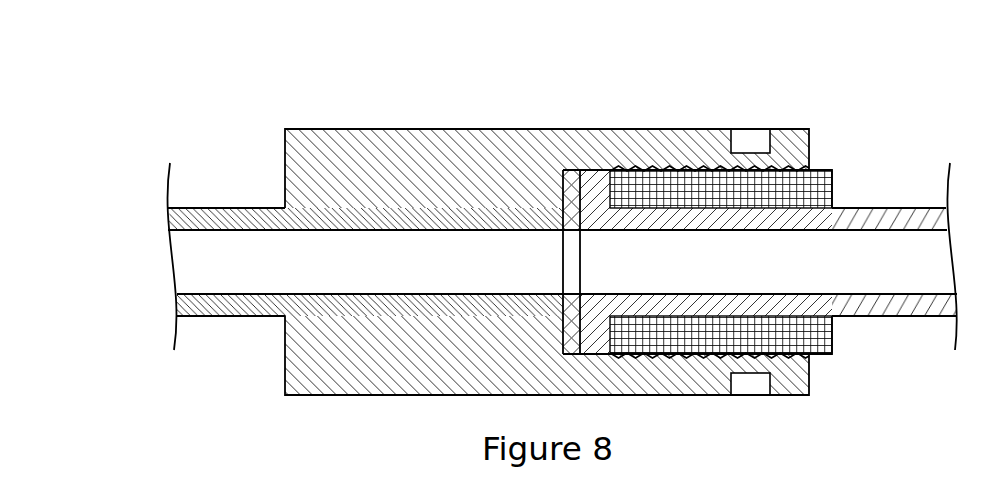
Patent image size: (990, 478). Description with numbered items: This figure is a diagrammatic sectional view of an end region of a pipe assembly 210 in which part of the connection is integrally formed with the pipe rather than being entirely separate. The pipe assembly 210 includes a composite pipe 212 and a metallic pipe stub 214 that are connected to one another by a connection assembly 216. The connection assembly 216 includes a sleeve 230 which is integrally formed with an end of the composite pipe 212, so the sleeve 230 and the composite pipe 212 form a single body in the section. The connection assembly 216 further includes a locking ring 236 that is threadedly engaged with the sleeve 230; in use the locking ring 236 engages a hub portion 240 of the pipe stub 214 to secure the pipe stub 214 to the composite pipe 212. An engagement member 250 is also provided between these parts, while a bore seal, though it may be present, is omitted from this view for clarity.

The pipe assembly 210 is at (228, 93).
The composite pipe 212 is at (222, 308).
The metallic pipe stub 214 is at (918, 303).
The connection assembly 216 is at (535, 82).
The sleeve 230 is at (337, 148).
The locking ring 236 is at (823, 185).
The hub portion 240 is at (597, 183).
The engagement member 250 is at (568, 345).